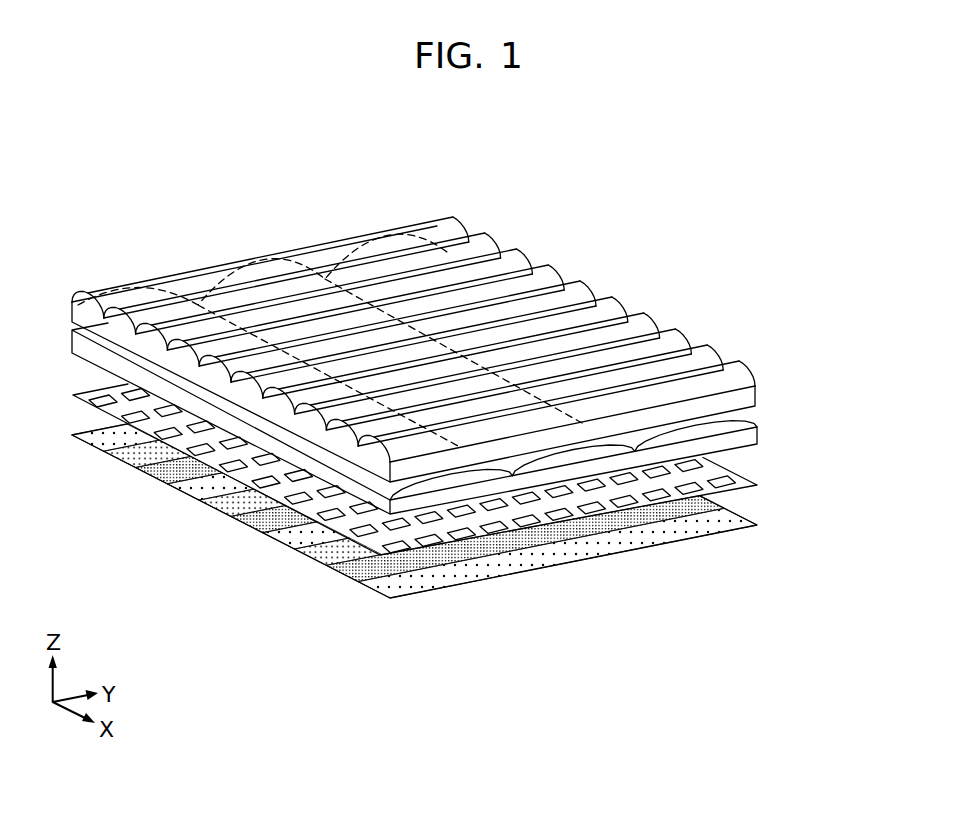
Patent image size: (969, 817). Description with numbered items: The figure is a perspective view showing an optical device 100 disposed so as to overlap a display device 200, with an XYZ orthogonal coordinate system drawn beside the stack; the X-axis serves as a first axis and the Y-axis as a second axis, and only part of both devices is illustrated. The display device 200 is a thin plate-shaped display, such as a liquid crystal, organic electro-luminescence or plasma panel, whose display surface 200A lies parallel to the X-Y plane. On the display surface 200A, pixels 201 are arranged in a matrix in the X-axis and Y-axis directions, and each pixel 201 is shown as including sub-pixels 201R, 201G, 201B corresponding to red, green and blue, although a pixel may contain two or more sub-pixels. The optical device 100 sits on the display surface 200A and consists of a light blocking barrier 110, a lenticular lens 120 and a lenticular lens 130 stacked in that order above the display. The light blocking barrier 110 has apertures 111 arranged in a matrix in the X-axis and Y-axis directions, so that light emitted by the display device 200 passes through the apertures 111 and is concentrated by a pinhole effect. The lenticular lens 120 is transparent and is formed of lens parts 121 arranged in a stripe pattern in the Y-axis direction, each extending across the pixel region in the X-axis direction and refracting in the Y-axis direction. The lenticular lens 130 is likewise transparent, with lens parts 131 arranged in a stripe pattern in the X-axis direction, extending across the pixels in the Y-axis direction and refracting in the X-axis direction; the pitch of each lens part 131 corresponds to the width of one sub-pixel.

The optical device 100 is at (482, 420).
The light blocking barrier 110 is at (458, 496).
The apertures 111 is at (565, 518).
The lenticular lens 120 is at (457, 473).
The lens parts 121 is at (467, 490).
The lenticular lens 130 is at (452, 349).
The lens parts 131 is at (76, 294).
The display device 200 is at (455, 511).
The display surface 200A is at (686, 527).
The pixels 201 is at (409, 511).
The sub-pixel 201R is at (430, 519).
The sub-pixel 201G is at (228, 508).
The sub-pixel 201B is at (226, 485).